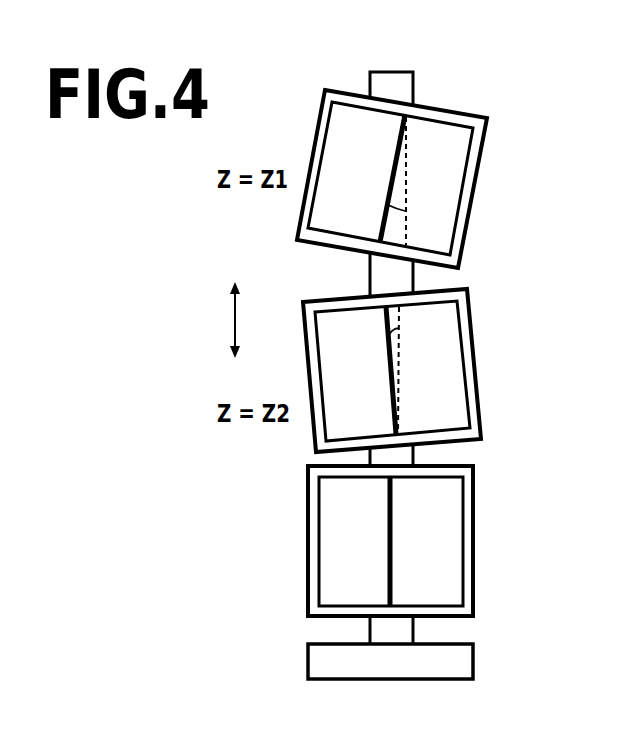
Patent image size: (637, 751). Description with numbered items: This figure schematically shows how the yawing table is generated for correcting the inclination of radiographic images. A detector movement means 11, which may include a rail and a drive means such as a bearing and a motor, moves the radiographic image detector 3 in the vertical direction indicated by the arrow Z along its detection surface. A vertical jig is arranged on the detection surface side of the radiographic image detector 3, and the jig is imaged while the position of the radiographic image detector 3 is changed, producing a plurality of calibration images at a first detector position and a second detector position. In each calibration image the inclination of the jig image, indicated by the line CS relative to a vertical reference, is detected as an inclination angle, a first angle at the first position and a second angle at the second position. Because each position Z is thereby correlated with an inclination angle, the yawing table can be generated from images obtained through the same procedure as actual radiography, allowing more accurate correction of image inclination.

The radiographic image detector 3 is at (340, 89).
The detector movement means 11 is at (390, 72).
The cell seam line CS is at (378, 228).
The direction of arrow Z is at (225, 320).